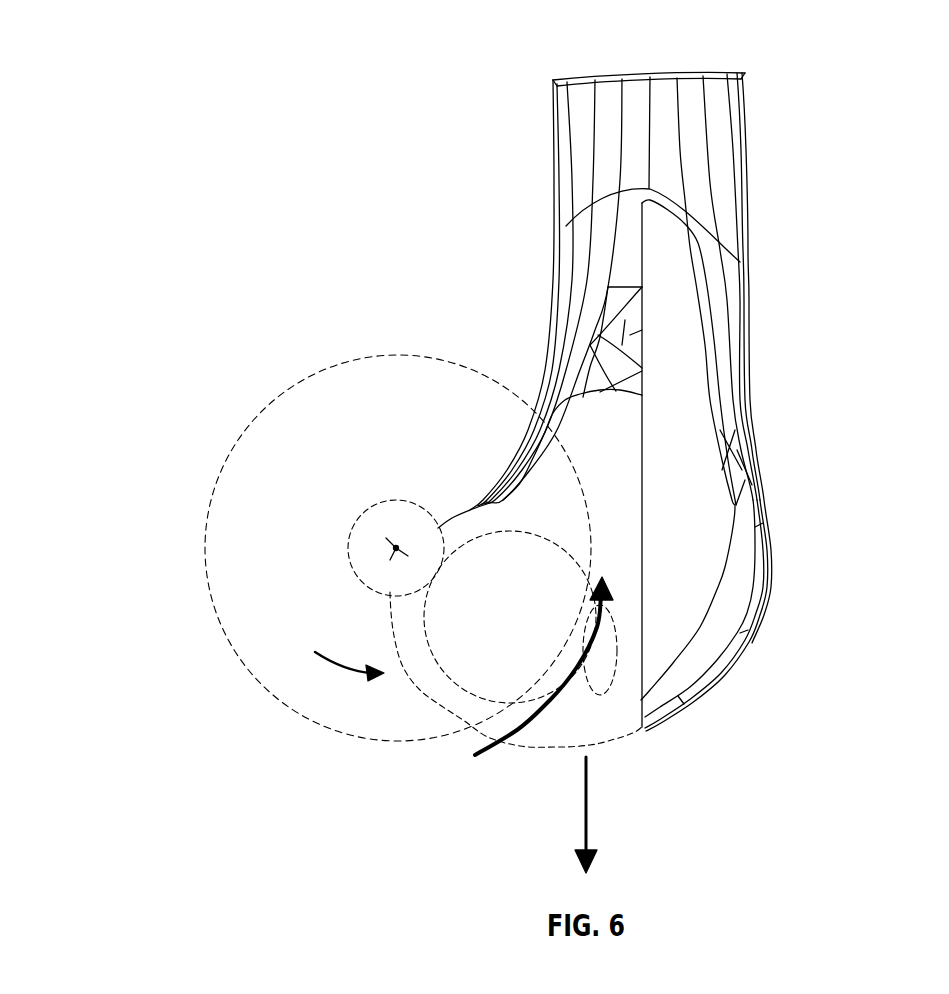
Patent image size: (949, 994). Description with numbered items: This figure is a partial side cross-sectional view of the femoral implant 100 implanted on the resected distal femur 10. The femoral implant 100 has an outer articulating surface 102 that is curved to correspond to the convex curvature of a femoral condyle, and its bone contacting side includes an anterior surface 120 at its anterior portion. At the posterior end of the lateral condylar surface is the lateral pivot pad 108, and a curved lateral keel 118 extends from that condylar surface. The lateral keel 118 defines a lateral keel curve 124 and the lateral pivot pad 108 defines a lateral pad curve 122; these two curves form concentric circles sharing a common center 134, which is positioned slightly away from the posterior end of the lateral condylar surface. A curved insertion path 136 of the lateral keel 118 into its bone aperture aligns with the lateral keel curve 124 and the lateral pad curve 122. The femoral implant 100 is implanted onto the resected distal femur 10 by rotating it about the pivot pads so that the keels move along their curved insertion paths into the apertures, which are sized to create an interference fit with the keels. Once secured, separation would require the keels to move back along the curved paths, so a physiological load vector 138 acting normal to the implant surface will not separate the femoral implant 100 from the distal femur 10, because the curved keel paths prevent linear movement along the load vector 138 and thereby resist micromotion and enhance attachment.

The resected distal femur 10 is at (470, 76).
The outer articulating surface 102 is at (780, 588).
The anterior surface 120 is at (722, 576).
The lateral keel 118 is at (607, 655).
The lateral keel curve 124 is at (318, 372).
The lateral pad curve 122 is at (418, 508).
The lateral pivot pad 108 is at (443, 557).
The center 134 is at (394, 549).
The curved insertion path 136 is at (523, 727).
The femoral implant 100 is at (324, 648).
The load vector 138 is at (586, 782).